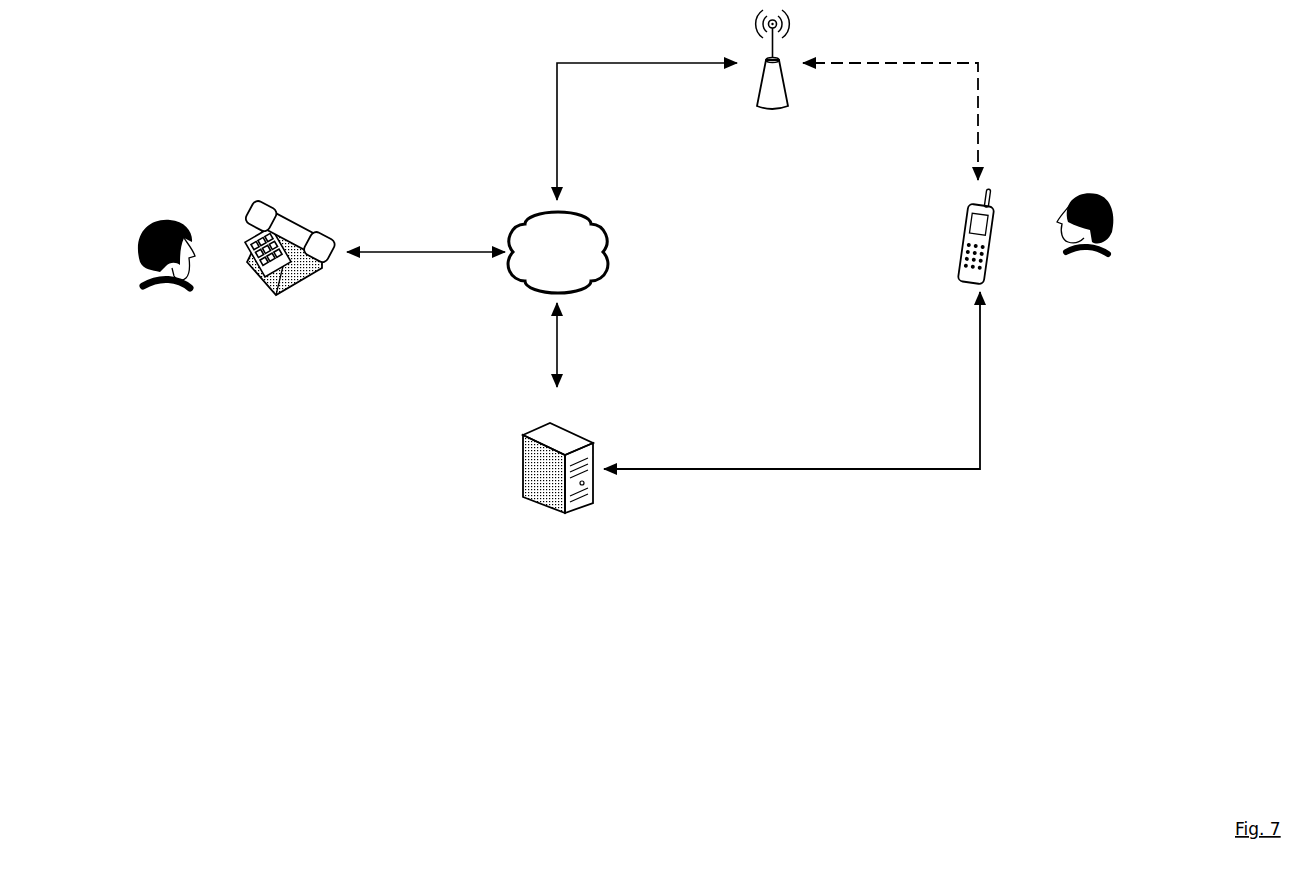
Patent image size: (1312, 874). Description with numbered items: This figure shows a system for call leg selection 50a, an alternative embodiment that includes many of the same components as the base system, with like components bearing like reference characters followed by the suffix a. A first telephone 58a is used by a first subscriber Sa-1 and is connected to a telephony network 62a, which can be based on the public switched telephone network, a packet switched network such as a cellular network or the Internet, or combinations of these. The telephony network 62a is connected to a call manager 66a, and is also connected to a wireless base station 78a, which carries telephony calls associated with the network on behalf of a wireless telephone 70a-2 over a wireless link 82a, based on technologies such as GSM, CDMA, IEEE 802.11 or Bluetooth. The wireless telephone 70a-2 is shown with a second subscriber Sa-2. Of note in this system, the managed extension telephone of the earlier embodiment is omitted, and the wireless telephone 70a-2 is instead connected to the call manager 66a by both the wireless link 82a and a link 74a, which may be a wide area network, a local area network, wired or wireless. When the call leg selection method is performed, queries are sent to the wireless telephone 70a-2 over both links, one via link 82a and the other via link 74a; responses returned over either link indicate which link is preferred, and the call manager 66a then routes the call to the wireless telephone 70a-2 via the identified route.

The system for call leg selection 50a is at (208, 688).
The first telephone 58a is at (278, 318).
The telephony network 62a is at (558, 252).
The call manager 66a is at (550, 512).
The wireless telephone 70a-2 is at (997, 225).
The link 74a is at (762, 475).
The wireless base station 78a is at (777, 118).
The wireless link 82a is at (869, 65).
The first subscriber Sa-1 is at (166, 270).
The second subscriber Sa-2 is at (1085, 237).